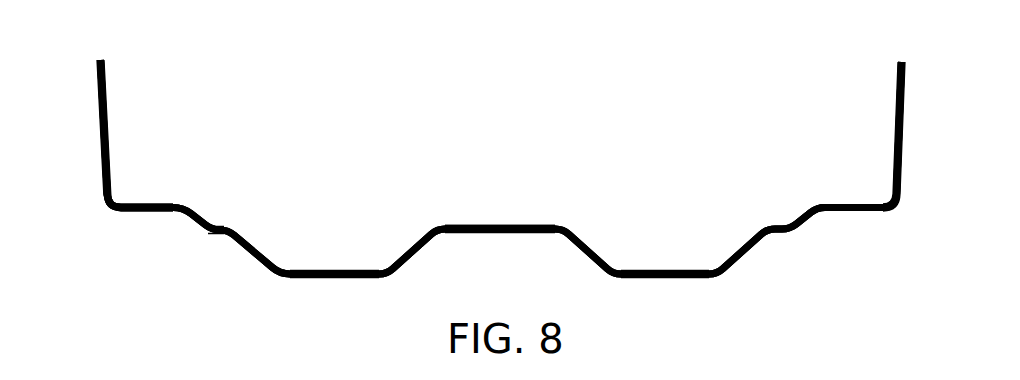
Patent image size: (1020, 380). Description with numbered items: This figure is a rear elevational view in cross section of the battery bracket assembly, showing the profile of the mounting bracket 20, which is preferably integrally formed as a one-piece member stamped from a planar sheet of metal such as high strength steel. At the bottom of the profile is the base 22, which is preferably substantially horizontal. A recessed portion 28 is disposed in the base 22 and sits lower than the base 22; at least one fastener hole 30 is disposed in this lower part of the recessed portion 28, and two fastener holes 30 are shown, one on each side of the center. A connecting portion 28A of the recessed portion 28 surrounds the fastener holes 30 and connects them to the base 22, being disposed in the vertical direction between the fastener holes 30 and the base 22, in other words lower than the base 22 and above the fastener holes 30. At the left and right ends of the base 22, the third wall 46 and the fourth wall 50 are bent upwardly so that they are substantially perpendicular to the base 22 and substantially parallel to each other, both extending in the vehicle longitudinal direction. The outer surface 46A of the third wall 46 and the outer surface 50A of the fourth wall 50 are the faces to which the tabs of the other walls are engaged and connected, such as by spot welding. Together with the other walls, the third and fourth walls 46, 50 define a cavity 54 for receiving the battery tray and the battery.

The mounting bracket 20 is at (215, 236).
The base 22 is at (157, 203).
The recessed portion 28 is at (470, 233).
The connecting portion 28A is at (527, 223).
The fastener hole 30 is at (330, 270).
The third wall 46 is at (98, 100).
The outer surface of the third wall 46A is at (99, 169).
The fourth wall 50 is at (904, 100).
The outer surface of the fourth wall 50A is at (901, 143).
The cavity 54 is at (728, 118).